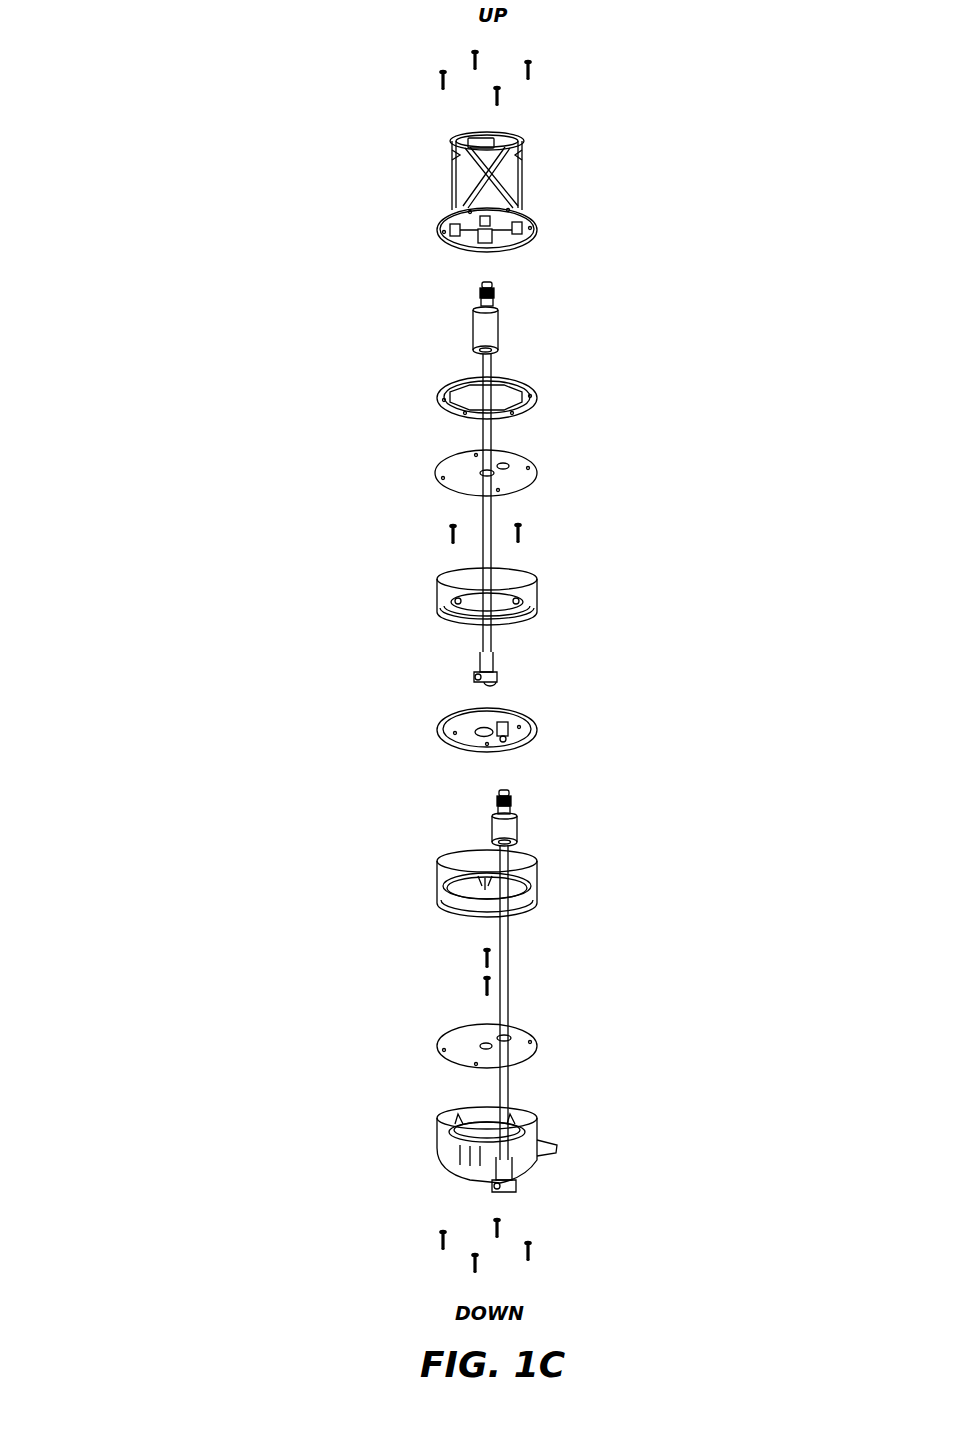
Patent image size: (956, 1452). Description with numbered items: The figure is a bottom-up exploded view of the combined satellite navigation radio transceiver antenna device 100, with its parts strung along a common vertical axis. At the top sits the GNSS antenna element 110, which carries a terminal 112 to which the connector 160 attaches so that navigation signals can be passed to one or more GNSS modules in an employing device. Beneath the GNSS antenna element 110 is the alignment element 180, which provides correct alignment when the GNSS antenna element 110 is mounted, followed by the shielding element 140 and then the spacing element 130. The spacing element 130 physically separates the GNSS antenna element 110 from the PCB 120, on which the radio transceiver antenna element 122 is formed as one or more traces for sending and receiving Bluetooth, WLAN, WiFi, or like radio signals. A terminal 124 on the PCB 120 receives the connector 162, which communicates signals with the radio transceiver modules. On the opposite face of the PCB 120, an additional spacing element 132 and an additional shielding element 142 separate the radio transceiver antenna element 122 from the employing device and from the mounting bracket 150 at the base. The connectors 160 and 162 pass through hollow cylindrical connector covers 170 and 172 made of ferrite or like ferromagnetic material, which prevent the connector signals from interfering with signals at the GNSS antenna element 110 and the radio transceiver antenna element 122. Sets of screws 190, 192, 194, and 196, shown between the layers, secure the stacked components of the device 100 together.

The combined satellite navigation radio transceiver antenna device 100 is at (240, 130).
The GNSS antenna element 110 is at (516, 204).
The terminal 112 is at (494, 246).
The PCB 120 is at (496, 737).
The radio transceiver antenna element 122 is at (440, 727).
The terminal 124 is at (516, 738).
The spacing element 130 is at (539, 578).
The spacing element 132 is at (540, 868).
The shielding element 140 is at (537, 473).
The shielding element 142 is at (540, 1040).
The mounting bracket 150 is at (553, 1146).
The connector 160 is at (494, 287).
The connector 162 is at (500, 800).
The connector cover 170 is at (496, 332).
The connector cover 172 is at (516, 825).
The alignment element 180 is at (537, 398).
The screws 190 is at (531, 65).
The screws 192 is at (522, 527).
The screws 194 is at (481, 963).
The screws 196 is at (532, 1246).